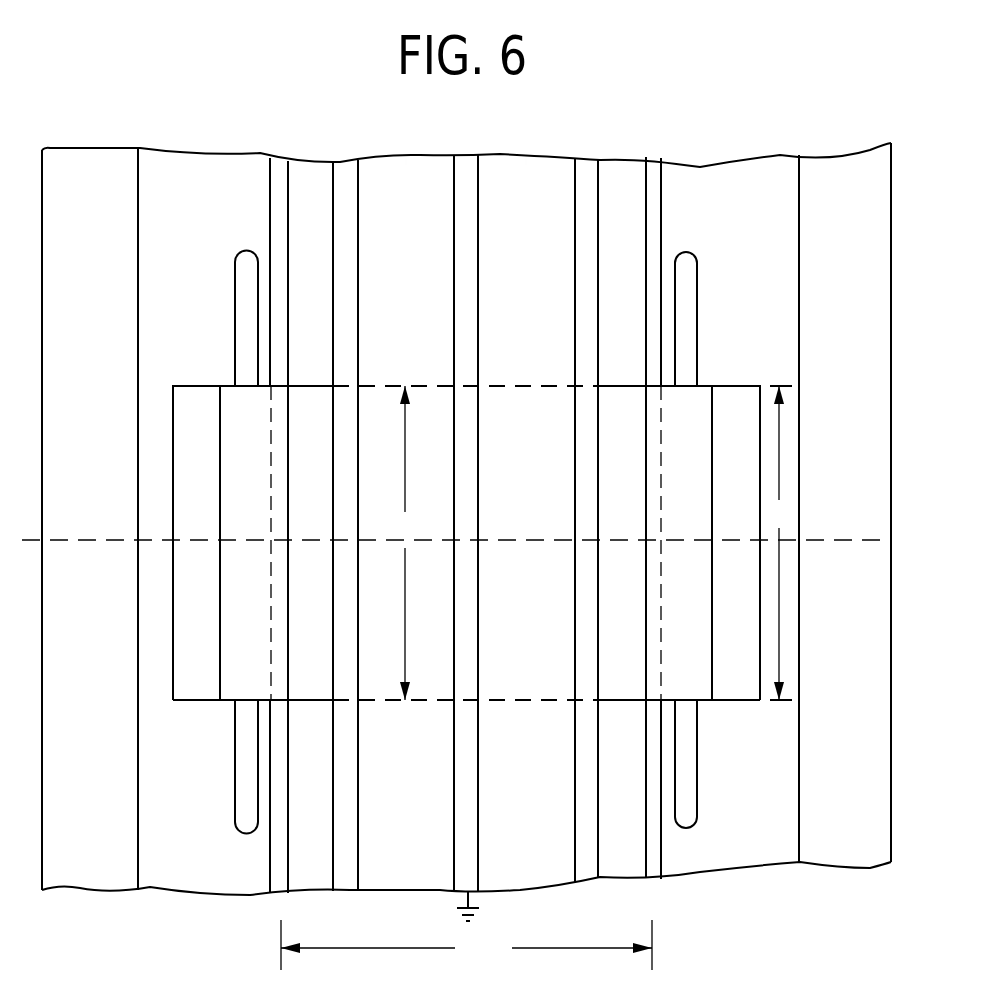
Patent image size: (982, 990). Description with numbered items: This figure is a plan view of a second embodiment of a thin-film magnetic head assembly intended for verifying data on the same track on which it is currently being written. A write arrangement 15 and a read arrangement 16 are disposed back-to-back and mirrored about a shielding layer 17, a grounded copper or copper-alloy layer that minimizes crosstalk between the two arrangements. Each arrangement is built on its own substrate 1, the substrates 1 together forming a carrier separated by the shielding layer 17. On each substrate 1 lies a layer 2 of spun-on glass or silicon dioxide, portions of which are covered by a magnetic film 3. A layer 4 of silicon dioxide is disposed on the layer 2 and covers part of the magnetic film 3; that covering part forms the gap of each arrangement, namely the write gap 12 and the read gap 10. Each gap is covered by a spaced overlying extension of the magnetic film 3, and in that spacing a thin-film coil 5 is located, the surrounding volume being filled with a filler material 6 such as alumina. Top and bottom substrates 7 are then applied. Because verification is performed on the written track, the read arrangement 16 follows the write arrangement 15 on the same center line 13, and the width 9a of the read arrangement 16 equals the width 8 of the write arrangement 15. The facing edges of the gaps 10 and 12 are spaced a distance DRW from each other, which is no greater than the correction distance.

The substrate 1 is at (396, 192).
The layer of spun-on glass or silicon dioxide 2 is at (342, 185).
The magnetic film 3 is at (307, 185).
The layer of silicon dioxide 4 is at (278, 170).
The thin-film coil 5 is at (255, 270).
The filler material 6 is at (176, 175).
The top and bottom substrates 7 is at (76, 178).
The width of the write arrangement 8 is at (781, 543).
The width of the read arrangement 9a is at (404, 543).
The read gap 10 is at (283, 476).
The write gap 12 is at (656, 458).
The center line 13 is at (838, 540).
The write arrangement 15 is at (729, 706).
The read arrangement 16 is at (226, 706).
The shielding layer 17 is at (462, 195).
The distance between facing gap edges DRW is at (466, 950).